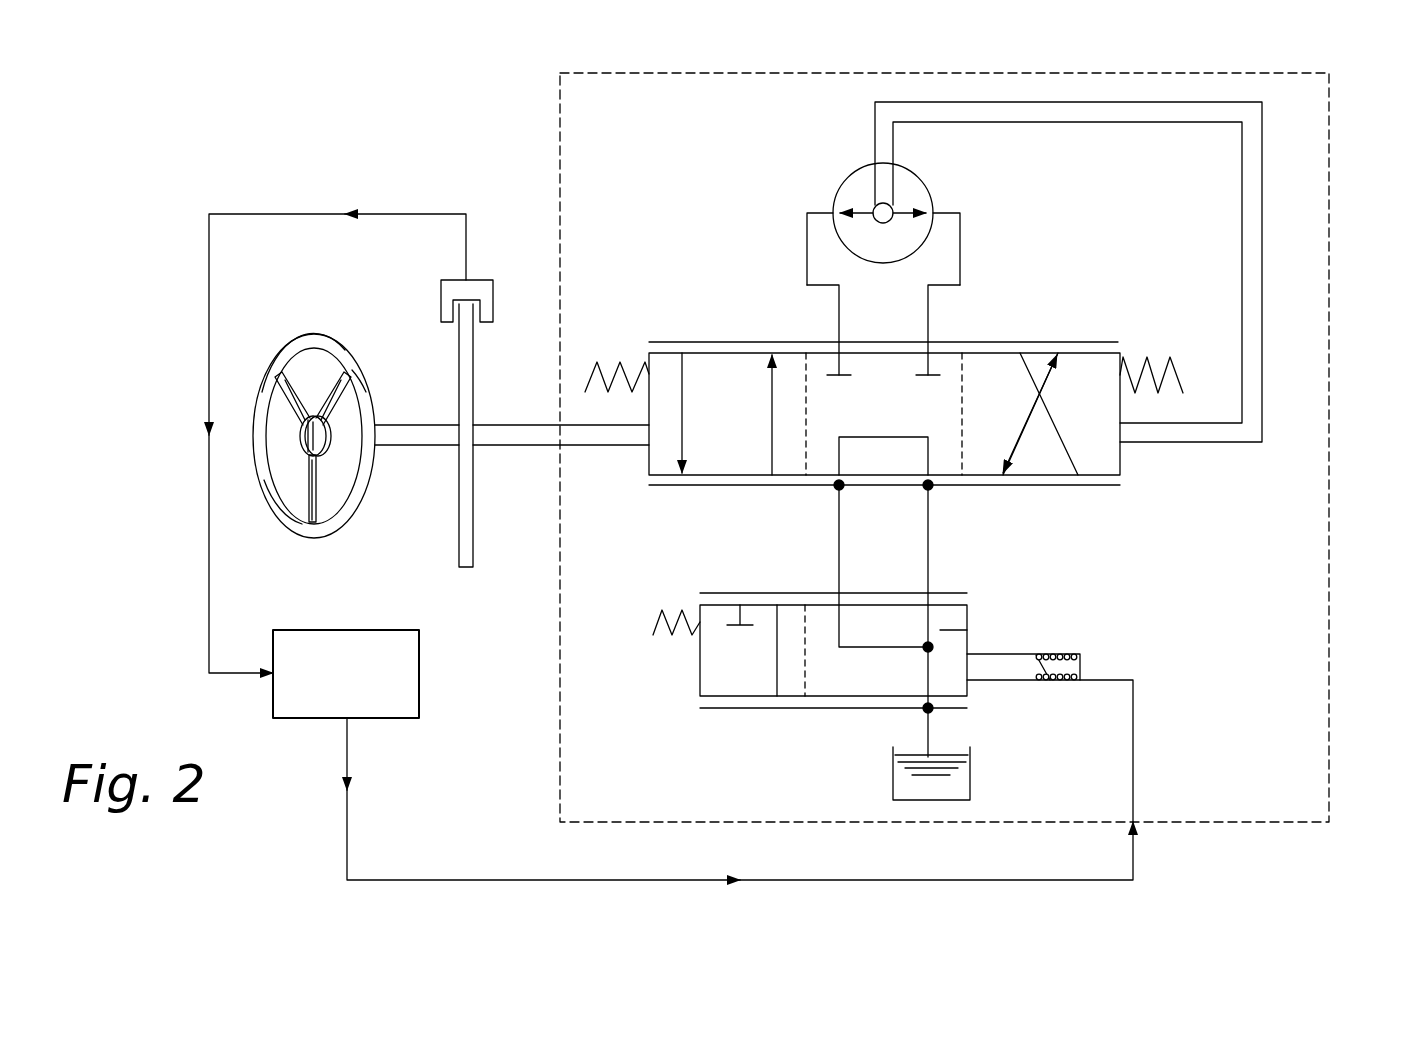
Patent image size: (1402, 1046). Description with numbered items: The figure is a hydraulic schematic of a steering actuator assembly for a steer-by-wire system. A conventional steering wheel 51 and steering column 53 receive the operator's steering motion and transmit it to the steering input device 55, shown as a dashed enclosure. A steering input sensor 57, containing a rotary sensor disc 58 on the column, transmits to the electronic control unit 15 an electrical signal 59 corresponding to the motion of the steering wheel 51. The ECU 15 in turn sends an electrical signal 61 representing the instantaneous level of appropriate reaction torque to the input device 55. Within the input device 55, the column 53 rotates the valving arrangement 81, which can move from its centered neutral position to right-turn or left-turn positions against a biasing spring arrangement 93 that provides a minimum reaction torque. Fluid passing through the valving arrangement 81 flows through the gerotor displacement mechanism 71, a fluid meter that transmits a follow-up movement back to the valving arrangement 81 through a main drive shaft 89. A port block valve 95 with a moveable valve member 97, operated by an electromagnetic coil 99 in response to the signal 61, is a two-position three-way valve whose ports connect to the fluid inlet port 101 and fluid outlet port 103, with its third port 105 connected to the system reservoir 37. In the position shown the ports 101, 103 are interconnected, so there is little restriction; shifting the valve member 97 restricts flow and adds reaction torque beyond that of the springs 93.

The electronic control unit 15 is at (335, 630).
The system reservoir 37 is at (892, 770).
The steering wheel 51 is at (293, 346).
The steering column 53 is at (530, 440).
The steering input device 55 is at (1332, 190).
The steering input sensor 57 is at (489, 262).
The rotary sensor disc 58 is at (459, 510).
The electrical signal 59 is at (324, 213).
The electrical signal 61 is at (346, 842).
The gerotor displacement mechanism 71 is at (848, 172).
The valving arrangement 81 is at (1079, 500).
The main drive shaft 89 is at (1078, 108).
The biasing spring arrangement 93 is at (616, 362).
The port block valve 95 is at (680, 684).
The moveable valve member 97 is at (966, 631).
The electromagnetic coil 99 is at (1082, 662).
The fluid inlet port 101 is at (932, 489).
The fluid outlet port 103 is at (837, 490).
The third port 105 is at (924, 712).